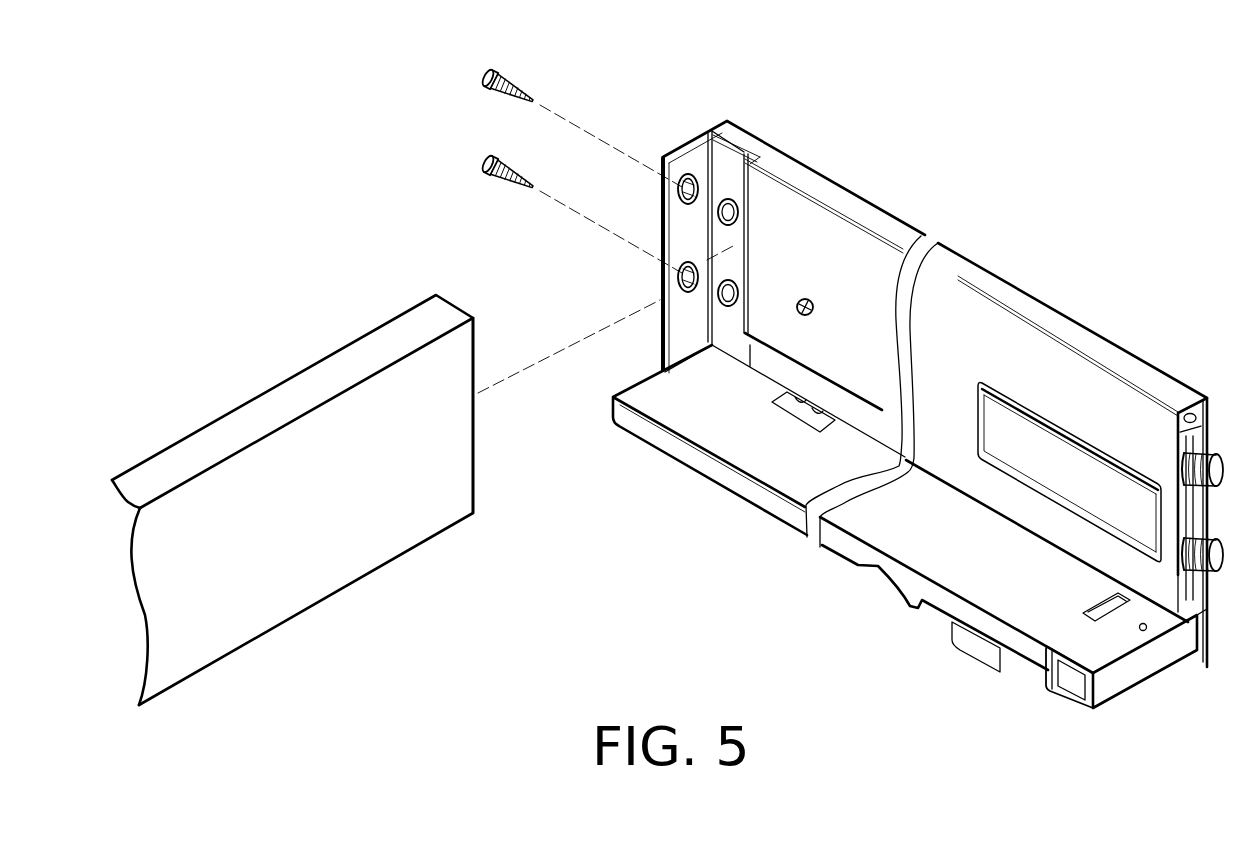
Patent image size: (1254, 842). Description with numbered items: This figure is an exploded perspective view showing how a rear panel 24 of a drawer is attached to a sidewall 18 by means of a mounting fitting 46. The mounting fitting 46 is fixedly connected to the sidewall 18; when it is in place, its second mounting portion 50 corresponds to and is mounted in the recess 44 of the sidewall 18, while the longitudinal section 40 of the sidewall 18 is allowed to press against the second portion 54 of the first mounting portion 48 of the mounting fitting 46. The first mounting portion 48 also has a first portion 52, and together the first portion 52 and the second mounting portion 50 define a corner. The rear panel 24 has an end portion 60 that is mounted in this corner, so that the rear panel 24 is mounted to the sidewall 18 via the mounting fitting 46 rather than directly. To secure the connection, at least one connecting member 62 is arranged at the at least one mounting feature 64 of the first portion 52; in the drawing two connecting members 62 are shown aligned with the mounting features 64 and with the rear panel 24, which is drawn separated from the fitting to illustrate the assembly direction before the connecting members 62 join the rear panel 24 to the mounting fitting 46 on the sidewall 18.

The sidewall 18 is at (975, 399).
The rear panel 24 is at (286, 384).
The longitudinal section 40 is at (756, 149).
The recess 44 is at (728, 188).
The mounting fitting 46 is at (752, 294).
The first mounting portion 48 is at (719, 124).
The second mounting portion 50 is at (748, 163).
The first portion 52 is at (677, 157).
The second portion 54 is at (727, 118).
The end portion 60 is at (477, 338).
The connecting member 62 is at (484, 158).
The mounting feature 64 is at (678, 188).